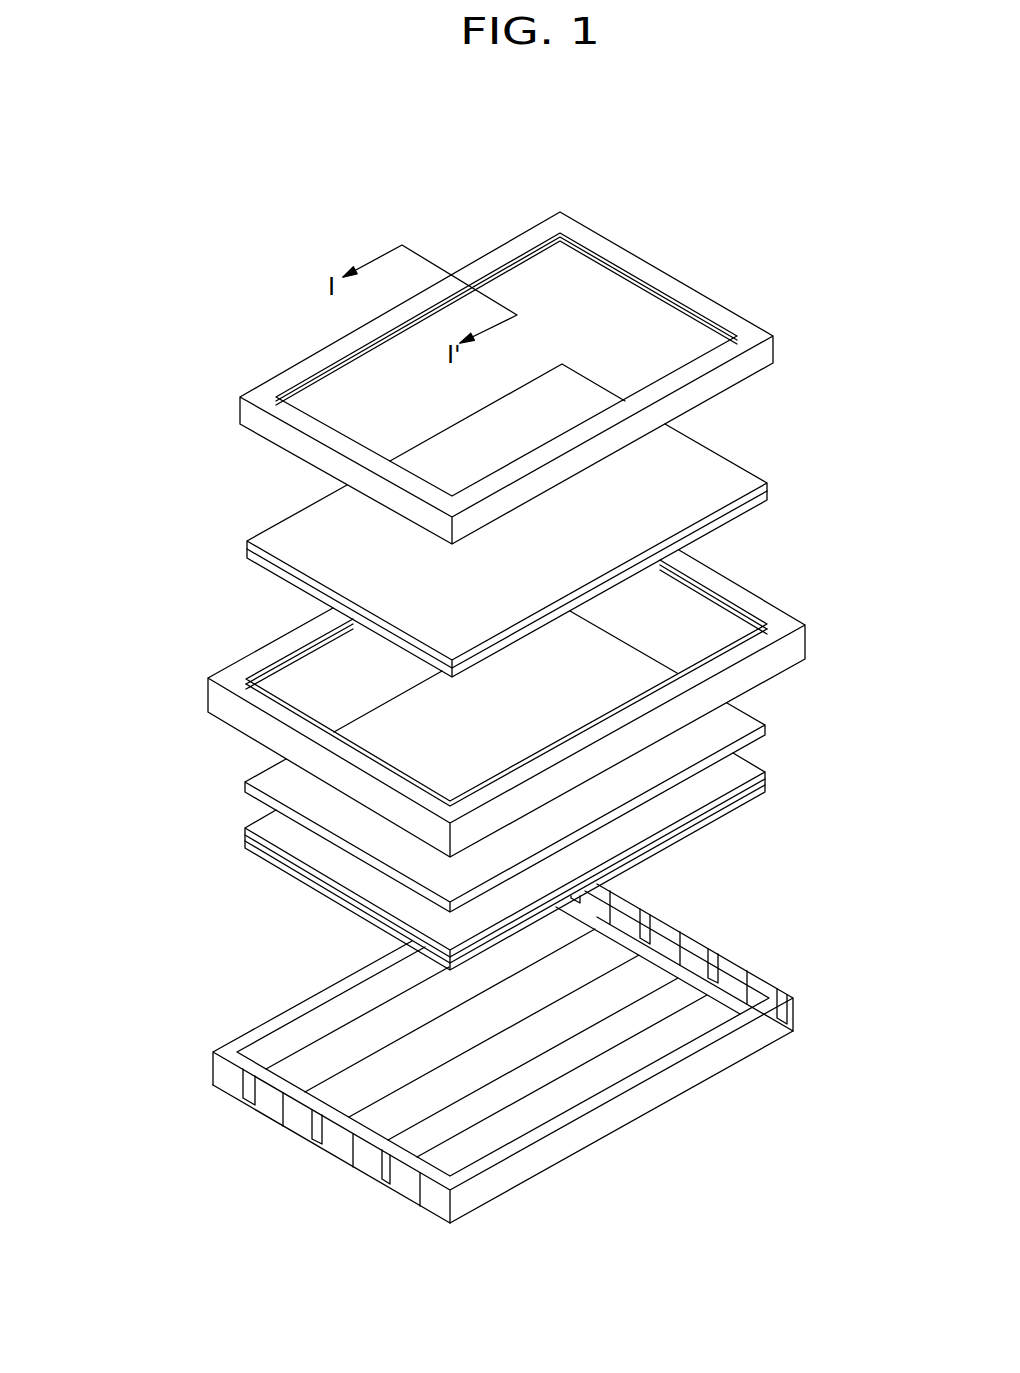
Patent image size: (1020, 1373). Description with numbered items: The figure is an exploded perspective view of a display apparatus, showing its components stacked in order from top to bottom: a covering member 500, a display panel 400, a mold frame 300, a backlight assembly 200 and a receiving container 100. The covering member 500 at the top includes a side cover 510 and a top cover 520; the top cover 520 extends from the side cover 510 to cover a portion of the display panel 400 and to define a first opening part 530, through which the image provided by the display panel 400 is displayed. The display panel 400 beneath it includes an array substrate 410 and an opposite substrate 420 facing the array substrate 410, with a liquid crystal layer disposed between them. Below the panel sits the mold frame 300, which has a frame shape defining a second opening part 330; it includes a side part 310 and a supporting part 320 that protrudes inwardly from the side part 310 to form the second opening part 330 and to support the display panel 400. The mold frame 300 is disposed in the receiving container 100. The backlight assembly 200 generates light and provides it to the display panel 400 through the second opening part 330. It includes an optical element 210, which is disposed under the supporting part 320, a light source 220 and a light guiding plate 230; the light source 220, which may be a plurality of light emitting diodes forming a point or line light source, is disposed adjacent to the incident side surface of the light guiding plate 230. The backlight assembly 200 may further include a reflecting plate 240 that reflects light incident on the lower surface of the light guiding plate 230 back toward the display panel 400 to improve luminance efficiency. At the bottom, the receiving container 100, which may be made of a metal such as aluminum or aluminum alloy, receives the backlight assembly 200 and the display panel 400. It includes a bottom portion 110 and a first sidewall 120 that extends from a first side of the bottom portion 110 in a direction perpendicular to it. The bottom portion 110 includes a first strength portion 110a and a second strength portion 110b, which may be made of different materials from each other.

The receiving container 100 is at (110, 1153).
The bottom portion 110 is at (170, 1137).
The first strength portion 110a is at (345, 1102).
The second strength portion 110b is at (378, 1120).
The first sidewall 120 is at (430, 1205).
The backlight assembly 200 is at (144, 772).
The optical element 210 is at (247, 784).
The light source 220 is at (244, 831).
The light guiding plate 230 is at (270, 848).
The reflecting plate 240 is at (280, 863).
The mold frame 300 is at (119, 638).
The side part 310 is at (243, 661).
The supporting part 320 is at (243, 679).
The second opening part 330 is at (241, 688).
The display panel 400 is at (147, 535).
The array substrate 410 is at (245, 553).
The opposite substrate 420 is at (247, 543).
The covering member 500 is at (147, 333).
The side cover 510 is at (247, 408).
The top cover 520 is at (263, 388).
The first opening part 530 is at (355, 383).